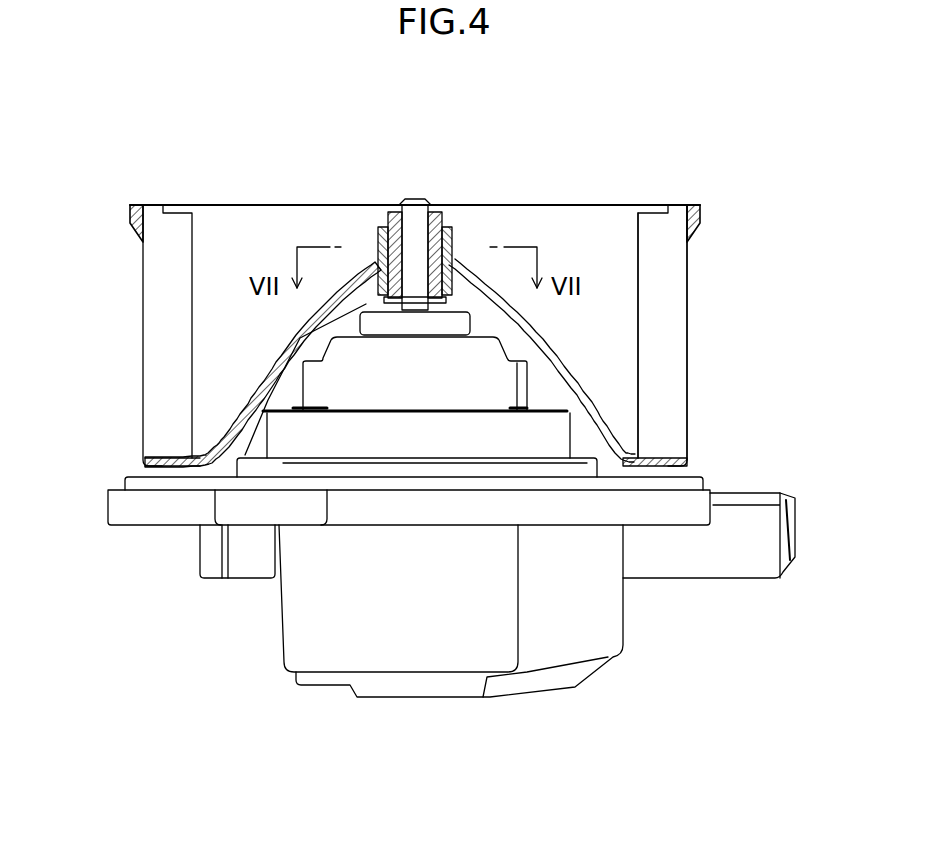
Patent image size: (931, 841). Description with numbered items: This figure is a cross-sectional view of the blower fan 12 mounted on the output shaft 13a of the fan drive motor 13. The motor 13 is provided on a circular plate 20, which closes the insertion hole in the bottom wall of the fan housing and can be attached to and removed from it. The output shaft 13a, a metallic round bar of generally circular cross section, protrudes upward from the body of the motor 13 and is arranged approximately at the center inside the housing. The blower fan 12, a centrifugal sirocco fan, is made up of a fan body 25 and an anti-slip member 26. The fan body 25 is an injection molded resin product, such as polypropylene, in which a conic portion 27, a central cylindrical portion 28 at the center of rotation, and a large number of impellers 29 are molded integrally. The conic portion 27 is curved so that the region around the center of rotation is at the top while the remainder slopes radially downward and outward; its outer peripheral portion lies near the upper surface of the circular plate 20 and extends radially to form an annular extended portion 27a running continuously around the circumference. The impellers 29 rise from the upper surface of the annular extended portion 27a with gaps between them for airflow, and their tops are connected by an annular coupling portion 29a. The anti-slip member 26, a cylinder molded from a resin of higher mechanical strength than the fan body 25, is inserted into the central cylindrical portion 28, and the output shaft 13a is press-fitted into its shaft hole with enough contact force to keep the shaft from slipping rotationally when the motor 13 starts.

The blower fan 12 is at (692, 278).
The fan drive motor 13 is at (415, 633).
The output shaft 13a is at (417, 199).
The circular plate 20 is at (678, 527).
The fan body 25 is at (602, 227).
The anti-slip member 26 is at (394, 211).
The conic portion 27 is at (498, 297).
The annular extended portion 27a is at (687, 466).
The central cylindrical portion 28 is at (456, 242).
The impellers 29 is at (165, 346).
The annular coupling portion 29a is at (130, 211).